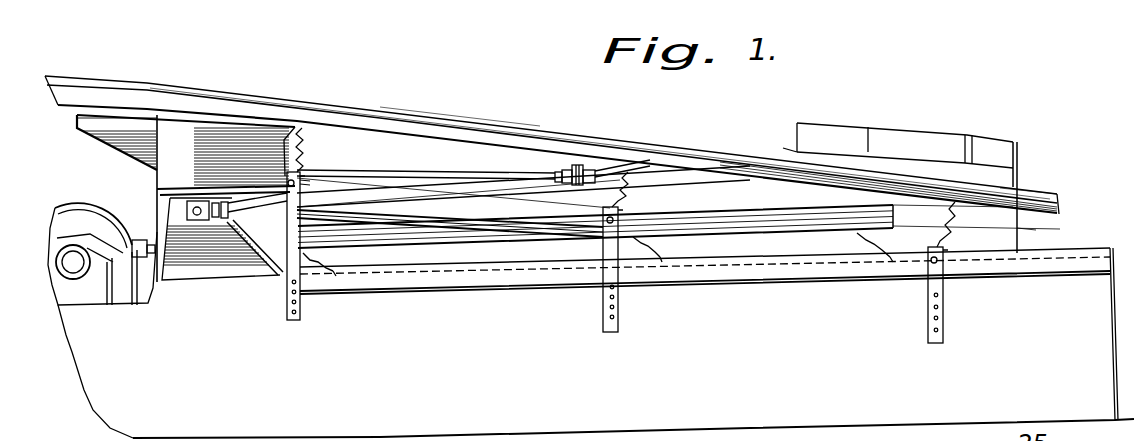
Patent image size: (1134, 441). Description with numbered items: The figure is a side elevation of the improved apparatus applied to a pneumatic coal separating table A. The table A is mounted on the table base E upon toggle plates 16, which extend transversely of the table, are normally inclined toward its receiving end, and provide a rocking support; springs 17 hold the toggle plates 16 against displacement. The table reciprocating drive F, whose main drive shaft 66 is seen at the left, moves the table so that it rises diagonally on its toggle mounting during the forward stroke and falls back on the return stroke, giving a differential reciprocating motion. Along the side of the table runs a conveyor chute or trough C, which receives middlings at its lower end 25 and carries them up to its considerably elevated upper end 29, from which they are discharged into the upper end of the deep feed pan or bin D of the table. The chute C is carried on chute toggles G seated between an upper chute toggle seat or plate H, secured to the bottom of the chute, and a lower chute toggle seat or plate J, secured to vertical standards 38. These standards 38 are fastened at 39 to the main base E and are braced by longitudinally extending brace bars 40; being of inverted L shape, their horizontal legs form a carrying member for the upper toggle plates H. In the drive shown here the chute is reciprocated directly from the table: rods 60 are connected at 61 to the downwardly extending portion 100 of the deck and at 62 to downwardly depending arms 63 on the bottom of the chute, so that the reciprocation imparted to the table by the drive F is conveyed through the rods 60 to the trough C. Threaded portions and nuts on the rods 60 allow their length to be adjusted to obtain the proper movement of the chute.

The feed pan or bin D is at (563, 131).
The upper end of chute C 29 is at (188, 100).
The conveyor chute or trough C is at (390, 117).
The lower end of chute C 25 is at (1044, 203).
The downwardly extending portion of the deck 100 is at (186, 198).
The chute toggles G is at (312, 145).
The upper chute toggle seat or plate H is at (313, 168).
The rod connection to table 61 is at (187, 207).
The rods 60 is at (257, 197).
The rod connection to arm 62 is at (590, 163).
The downwardly depending arms 63 is at (567, 167).
The table reciprocating drive F is at (102, 309).
The shaft of the main table drive 66 is at (77, 267).
The vertical standards 38 is at (293, 263).
The fastening of standards to base 39 is at (293, 325).
The longitudinally extending brace bars 40 is at (487, 208).
The toggle plates 16 is at (333, 261).
The springs 17 is at (323, 278).
The pneumatic coal separating table A is at (773, 153).
The lower chute toggle seat or plate J is at (950, 240).
The table base E is at (633, 343).